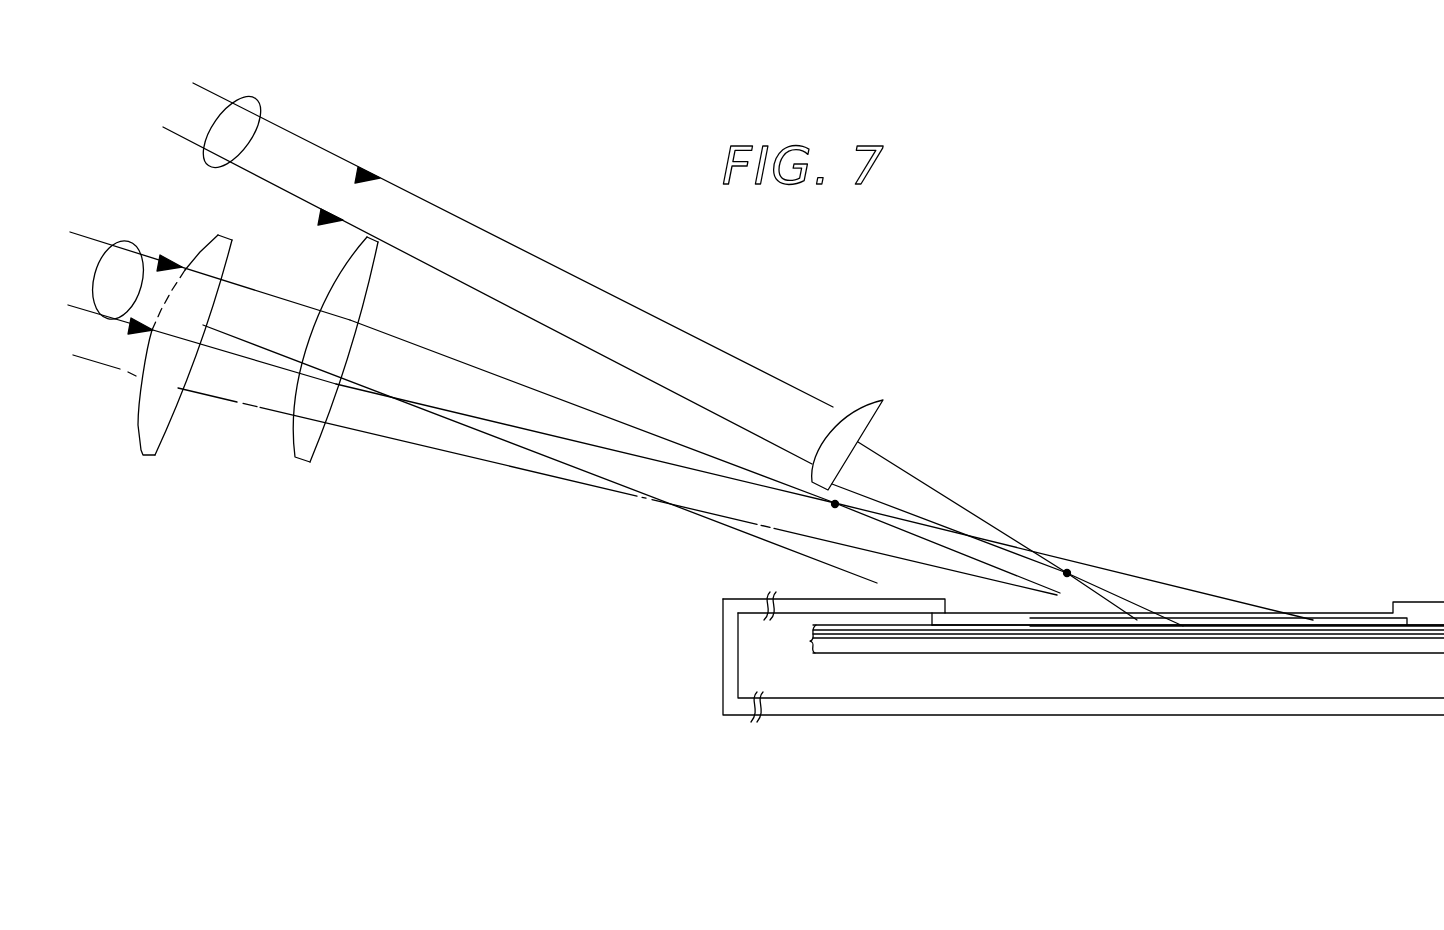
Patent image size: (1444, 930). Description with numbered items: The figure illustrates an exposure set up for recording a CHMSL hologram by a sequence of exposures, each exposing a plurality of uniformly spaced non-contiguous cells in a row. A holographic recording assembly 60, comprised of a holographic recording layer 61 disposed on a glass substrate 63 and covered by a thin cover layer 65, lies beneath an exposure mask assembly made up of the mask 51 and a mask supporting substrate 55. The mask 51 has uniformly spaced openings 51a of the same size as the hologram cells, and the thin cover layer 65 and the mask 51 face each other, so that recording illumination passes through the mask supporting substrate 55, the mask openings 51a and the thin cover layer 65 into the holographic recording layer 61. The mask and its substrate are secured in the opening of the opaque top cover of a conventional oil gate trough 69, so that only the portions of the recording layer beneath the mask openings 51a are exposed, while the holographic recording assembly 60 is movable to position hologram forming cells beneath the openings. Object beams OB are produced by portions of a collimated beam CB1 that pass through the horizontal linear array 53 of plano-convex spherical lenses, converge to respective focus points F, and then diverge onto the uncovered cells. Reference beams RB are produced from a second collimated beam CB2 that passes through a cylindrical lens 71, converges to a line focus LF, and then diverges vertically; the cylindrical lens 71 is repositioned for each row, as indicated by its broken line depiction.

The collimated beam CB1 is at (272, 81).
The collimated beam CB2 is at (128, 240).
The cylindrical lens 71 is at (313, 430).
The horizontal linear array of plano-convex spherical lenses 53 is at (855, 417).
The line focus LF is at (835, 505).
The focus point F is at (1067, 572).
The object beam OB is at (1121, 594).
The reference beam RB is at (1207, 594).
The oil gate trough 69 is at (721, 603).
The holographic recording assembly 60 is at (800, 627).
The thin cover layer 65 is at (867, 626).
The holographic recording layer 61 is at (897, 634).
The glass substrate 63 is at (985, 645).
The mask openings 51a is at (1152, 627).
The mask supporting substrate 55 is at (1330, 618).
The mask 51 is at (1360, 625).